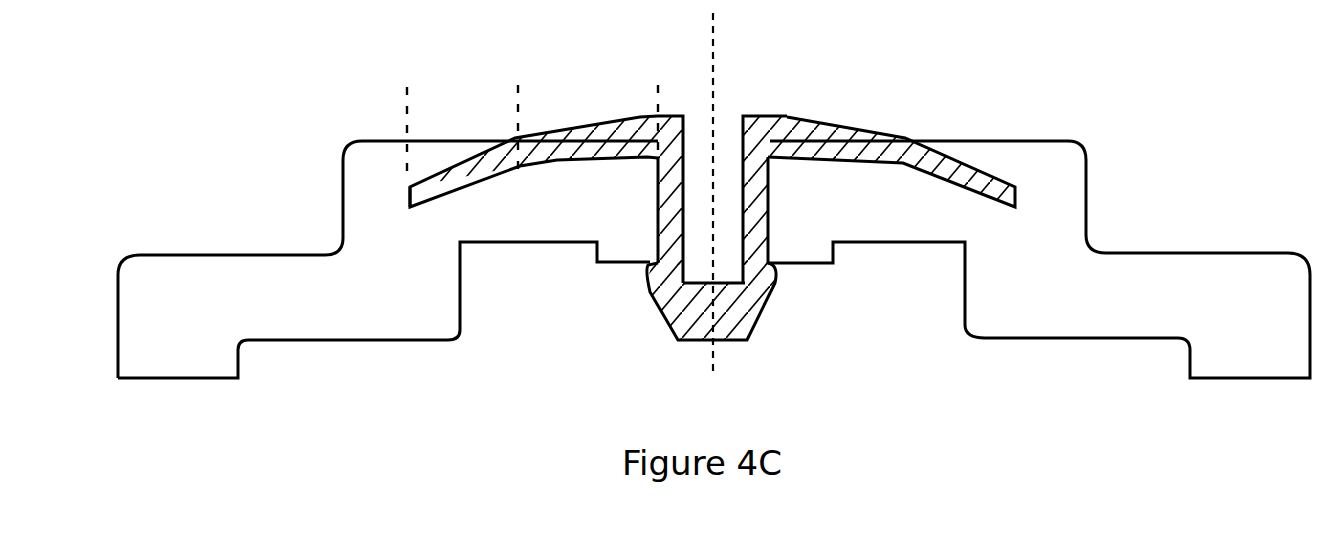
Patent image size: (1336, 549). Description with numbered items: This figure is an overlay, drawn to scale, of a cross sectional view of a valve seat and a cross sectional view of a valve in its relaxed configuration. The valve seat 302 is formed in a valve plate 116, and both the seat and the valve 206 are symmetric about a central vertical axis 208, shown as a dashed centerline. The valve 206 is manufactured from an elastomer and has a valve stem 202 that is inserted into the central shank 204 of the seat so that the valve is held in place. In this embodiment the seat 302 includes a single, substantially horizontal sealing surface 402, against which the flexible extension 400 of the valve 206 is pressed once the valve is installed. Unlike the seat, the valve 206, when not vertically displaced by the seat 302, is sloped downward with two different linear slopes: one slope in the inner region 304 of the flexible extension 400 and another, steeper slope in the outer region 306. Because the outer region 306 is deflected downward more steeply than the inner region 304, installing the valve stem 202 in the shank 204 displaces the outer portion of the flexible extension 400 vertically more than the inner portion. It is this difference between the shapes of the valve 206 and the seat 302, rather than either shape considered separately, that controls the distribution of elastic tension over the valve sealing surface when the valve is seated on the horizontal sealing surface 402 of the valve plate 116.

The valve plate 116 is at (1266, 324).
The valve stem 202 is at (670, 207).
The central shank 204 is at (770, 203).
The valve 206 is at (763, 315).
The vertical axis 208 is at (713, 44).
The valve seat 302 is at (1045, 279).
The inner region 304 is at (572, 162).
The outer region 306 is at (470, 185).
The flexible extension 400 is at (1025, 125).
The sealing surface 402 is at (373, 141).